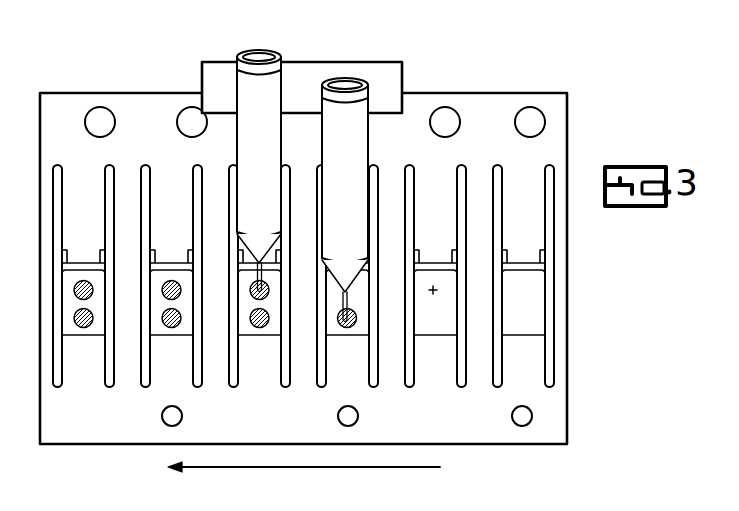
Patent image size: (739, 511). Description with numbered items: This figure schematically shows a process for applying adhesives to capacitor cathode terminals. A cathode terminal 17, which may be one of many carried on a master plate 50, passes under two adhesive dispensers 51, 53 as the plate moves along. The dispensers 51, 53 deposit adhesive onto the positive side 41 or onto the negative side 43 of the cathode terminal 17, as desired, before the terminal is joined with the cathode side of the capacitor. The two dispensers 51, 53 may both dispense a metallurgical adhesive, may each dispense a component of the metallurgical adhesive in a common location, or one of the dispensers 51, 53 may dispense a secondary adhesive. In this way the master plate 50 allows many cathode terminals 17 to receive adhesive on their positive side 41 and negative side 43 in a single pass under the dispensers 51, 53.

The cathode terminal 17 is at (67, 280).
The positive side 41 is at (77, 289).
The negative side 43 is at (78, 319).
The master plate 50 is at (467, 425).
The adhesive dispenser 51 is at (280, 58).
The adhesive dispenser 53 is at (347, 82).